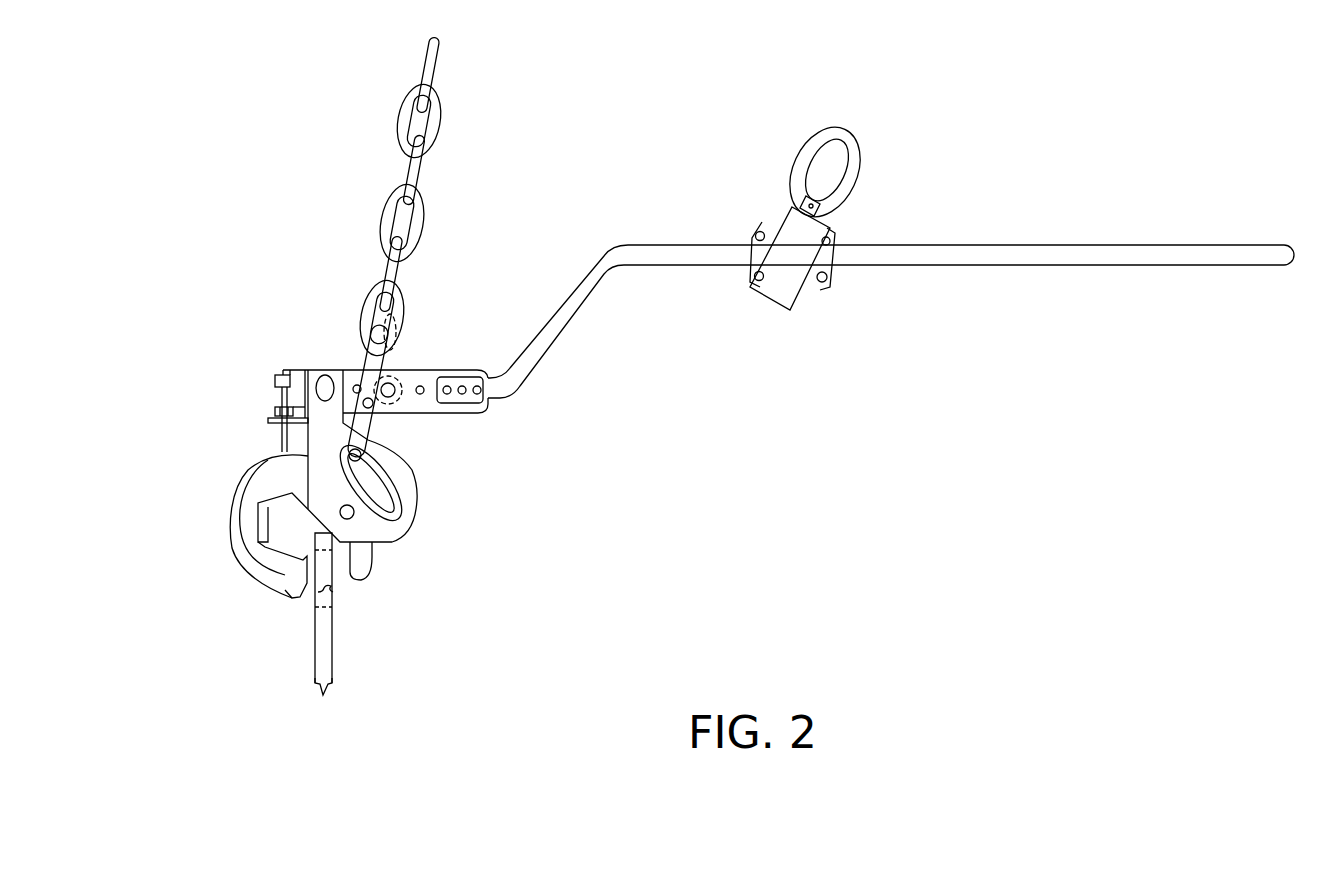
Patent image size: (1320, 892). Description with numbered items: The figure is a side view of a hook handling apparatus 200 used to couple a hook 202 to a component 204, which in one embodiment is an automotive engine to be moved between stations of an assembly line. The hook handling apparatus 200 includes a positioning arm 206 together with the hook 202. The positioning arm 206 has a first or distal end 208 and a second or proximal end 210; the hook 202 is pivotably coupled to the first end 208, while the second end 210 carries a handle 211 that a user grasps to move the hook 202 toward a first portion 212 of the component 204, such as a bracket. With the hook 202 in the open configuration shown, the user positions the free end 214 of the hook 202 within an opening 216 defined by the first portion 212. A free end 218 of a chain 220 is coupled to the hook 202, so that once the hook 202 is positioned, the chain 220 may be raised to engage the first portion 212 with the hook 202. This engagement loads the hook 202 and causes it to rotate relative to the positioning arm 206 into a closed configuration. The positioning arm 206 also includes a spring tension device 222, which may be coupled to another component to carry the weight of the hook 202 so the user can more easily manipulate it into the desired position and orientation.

The hook handling apparatus 200 is at (951, 171).
The hook 202 is at (222, 469).
The component 204 is at (345, 682).
The positioning arm 206 is at (998, 268).
The first end 208 is at (276, 362).
The second end 210 is at (1278, 290).
The handle 211 is at (1193, 253).
The first portion 212 is at (325, 627).
The free end 214 is at (285, 607).
The opening 216 is at (335, 591).
The free end 218 is at (385, 446).
The chain 220 is at (440, 137).
The spring tension device 222 is at (832, 142).